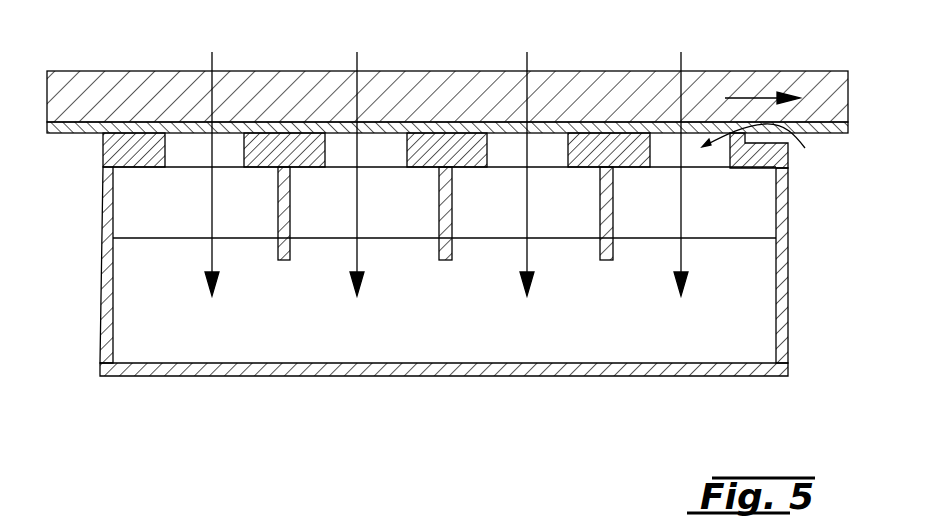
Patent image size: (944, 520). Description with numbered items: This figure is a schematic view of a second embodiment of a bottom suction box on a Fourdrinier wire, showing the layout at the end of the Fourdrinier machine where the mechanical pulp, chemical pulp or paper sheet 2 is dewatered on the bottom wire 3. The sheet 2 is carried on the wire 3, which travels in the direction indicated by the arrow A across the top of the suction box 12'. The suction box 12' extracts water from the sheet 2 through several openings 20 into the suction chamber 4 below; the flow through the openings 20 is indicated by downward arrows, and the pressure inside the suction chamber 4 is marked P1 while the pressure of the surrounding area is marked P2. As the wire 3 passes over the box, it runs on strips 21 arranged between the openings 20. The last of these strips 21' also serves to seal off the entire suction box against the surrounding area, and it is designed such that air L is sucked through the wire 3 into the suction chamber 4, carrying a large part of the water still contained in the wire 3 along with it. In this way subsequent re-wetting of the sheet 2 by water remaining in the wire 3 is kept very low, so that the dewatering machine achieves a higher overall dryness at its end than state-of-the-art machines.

The paper sheet 2 is at (709, 103).
The wire 3 is at (612, 125).
The direction of travel A is at (762, 96).
The openings 20 is at (183, 150).
The strips 21 is at (376, 86).
The last strip 21' is at (796, 177).
The air L is at (759, 154).
The suction chamber 4 is at (740, 328).
The suction box 12' is at (444, 426).
The pressure P1 is at (617, 328).
The pressure P2 is at (848, 292).